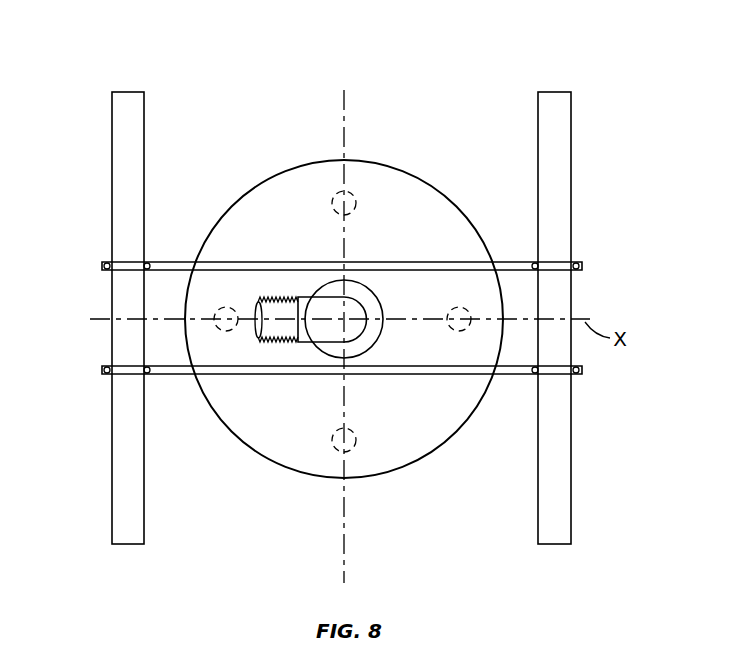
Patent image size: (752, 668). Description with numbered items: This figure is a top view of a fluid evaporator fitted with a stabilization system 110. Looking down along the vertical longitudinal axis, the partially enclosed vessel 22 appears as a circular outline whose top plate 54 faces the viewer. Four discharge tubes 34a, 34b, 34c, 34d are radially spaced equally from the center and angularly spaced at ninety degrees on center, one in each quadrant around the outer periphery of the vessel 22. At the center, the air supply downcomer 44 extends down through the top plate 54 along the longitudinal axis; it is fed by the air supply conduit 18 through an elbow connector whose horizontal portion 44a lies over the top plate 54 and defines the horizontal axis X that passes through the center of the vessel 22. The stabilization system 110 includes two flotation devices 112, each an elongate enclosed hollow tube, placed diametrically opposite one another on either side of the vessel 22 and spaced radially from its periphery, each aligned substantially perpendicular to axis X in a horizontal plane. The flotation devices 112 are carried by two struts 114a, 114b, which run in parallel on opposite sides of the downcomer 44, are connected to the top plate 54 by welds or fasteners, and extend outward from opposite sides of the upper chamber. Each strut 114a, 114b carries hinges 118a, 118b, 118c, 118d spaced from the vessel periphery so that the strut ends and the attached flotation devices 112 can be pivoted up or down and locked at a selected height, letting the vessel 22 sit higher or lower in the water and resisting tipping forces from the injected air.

The partially enclosed vessel 22 is at (445, 179).
The top plate 54 is at (285, 185).
The discharge tube 34a is at (226, 332).
The discharge tube 34b is at (459, 332).
The discharge tube 34c is at (334, 446).
The discharge tube 34d is at (356, 200).
The air supply downcomer 44 is at (357, 304).
The horizontal portion 44a is at (303, 297).
The air supply conduit 18 is at (257, 310).
The stabilization system 110 is at (584, 138).
The flotation device 112 is at (112, 190).
The strut 114a is at (158, 262).
The strut 114b is at (158, 376).
The hinge 118a is at (181, 362).
The hinge 118b is at (181, 278).
The hinge 118c is at (500, 360).
The hinge 118d is at (501, 278).